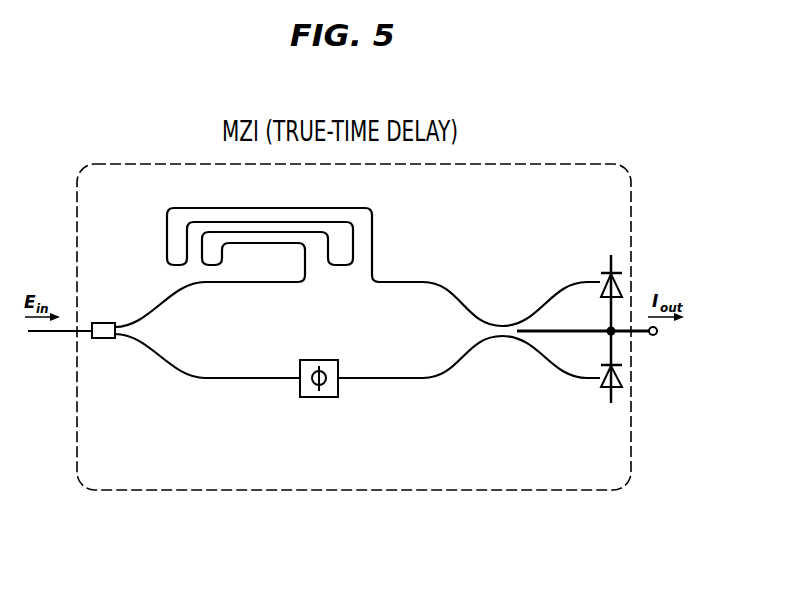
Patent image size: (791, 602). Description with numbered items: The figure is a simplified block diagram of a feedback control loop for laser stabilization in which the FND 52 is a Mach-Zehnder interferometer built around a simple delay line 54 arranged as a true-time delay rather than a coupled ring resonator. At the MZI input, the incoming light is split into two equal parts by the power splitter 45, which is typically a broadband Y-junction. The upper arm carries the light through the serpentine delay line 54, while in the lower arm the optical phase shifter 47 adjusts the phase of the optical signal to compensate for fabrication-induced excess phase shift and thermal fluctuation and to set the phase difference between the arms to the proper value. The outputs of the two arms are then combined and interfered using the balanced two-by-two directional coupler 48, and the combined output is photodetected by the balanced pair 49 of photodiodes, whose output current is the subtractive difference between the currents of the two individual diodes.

The power splitter 45 is at (84, 355).
The optical phase shifter 47 is at (303, 398).
The balanced 2×2 directional coupler 48 is at (503, 355).
The balanced pair of photodiodes 49 is at (630, 281).
The FND 52 is at (78, 195).
The delay line 54 is at (196, 208).